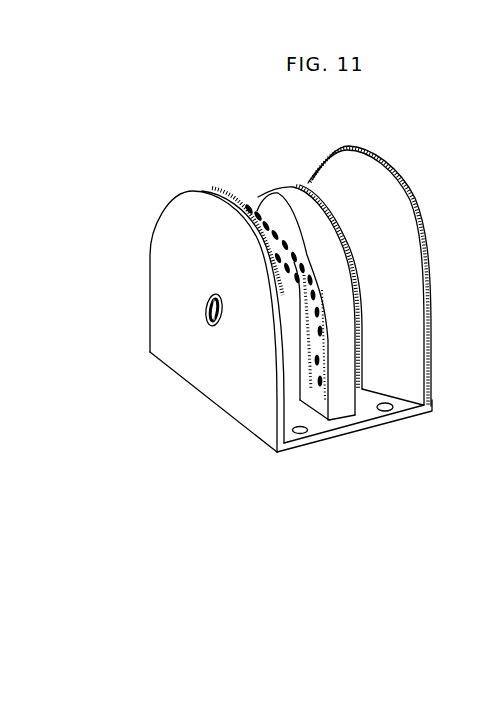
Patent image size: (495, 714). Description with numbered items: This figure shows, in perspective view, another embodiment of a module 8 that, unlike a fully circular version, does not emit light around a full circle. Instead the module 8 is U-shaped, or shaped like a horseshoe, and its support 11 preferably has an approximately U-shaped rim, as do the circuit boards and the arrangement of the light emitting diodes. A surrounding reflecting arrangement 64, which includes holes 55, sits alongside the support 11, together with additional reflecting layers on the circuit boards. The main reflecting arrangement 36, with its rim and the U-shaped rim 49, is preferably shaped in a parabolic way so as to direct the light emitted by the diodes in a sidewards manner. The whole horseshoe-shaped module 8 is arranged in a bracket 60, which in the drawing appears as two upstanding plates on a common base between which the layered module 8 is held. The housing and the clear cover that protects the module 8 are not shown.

The module 8 is at (278, 175).
The support 11 is at (276, 193).
The main reflecting arrangement 36 is at (391, 249).
The U-shaped rim 49 is at (396, 194).
The holes 55 is at (298, 319).
The bracket 60 is at (165, 262).
The surrounding reflecting arrangement 64 is at (243, 203).